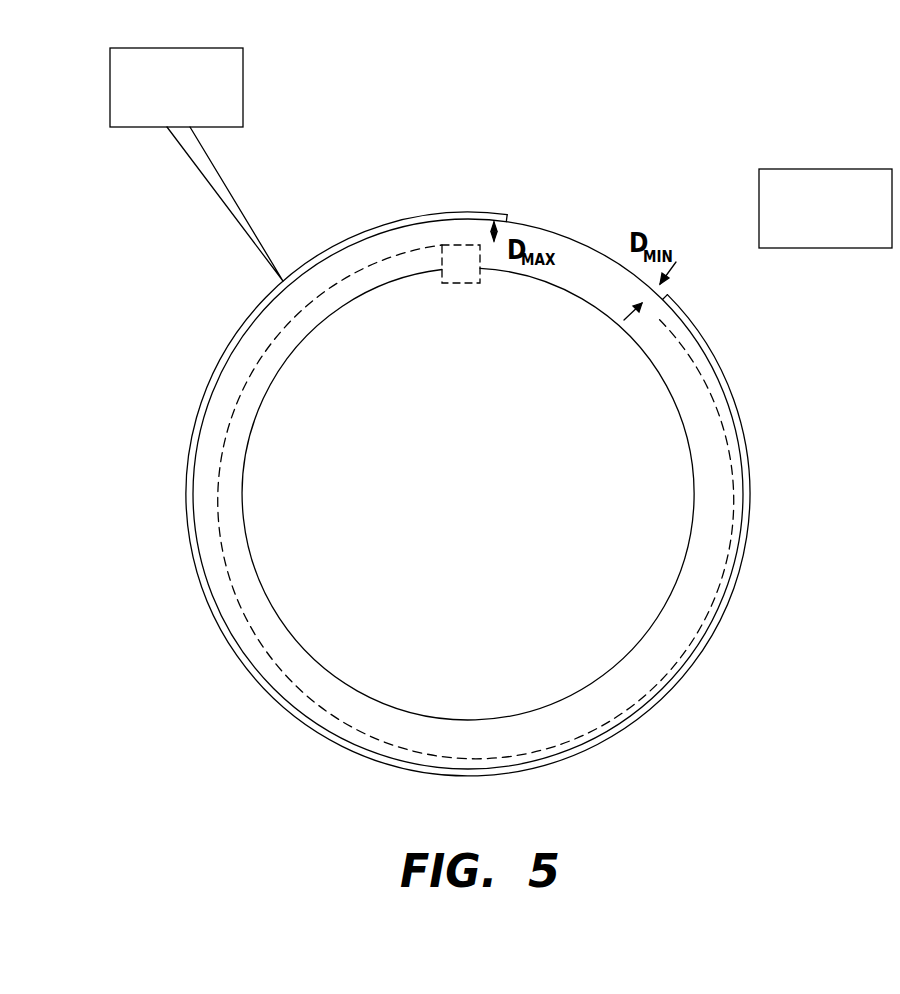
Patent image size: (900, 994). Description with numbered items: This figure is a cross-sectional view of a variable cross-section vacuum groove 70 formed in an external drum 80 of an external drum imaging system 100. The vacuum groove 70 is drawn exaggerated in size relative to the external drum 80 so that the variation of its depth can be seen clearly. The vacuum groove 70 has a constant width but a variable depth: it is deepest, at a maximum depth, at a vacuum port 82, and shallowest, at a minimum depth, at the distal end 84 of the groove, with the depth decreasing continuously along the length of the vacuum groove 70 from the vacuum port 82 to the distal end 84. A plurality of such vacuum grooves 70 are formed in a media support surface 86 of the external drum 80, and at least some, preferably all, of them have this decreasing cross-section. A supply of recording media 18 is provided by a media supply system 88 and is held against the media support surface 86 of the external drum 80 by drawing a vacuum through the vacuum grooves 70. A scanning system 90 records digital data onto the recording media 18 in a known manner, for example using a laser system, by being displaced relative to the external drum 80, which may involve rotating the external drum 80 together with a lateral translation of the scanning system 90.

The external drum imaging system 100 is at (697, 95).
The scanning system 90 is at (127, 116).
The media supply system 88 is at (841, 240).
The external drum 80 is at (591, 216).
The media support surface 86 is at (521, 222).
The distal end 84 is at (661, 314).
The vacuum port 82 is at (460, 283).
The vacuum groove 70 is at (210, 437).
The recording media 18 is at (742, 411).